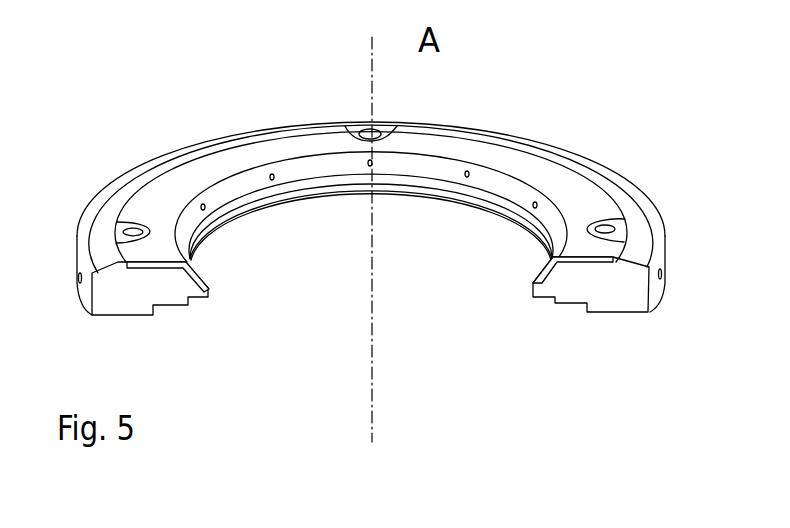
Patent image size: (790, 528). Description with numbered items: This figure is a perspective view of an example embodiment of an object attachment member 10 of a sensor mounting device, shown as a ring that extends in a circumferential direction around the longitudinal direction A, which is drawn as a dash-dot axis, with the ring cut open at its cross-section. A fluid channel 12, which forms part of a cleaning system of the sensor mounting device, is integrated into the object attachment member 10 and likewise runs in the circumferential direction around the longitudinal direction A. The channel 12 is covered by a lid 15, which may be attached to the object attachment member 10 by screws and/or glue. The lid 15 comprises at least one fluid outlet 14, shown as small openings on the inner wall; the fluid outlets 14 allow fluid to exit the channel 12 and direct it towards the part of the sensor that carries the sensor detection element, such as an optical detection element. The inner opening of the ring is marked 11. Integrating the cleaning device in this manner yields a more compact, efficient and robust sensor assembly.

The object attachment member 10 is at (197, 179).
The central bore / inner opening 11 is at (313, 221).
The fluid channel 12 is at (190, 276).
The fluid outlet 14 is at (469, 172).
The lid 15 is at (565, 183).